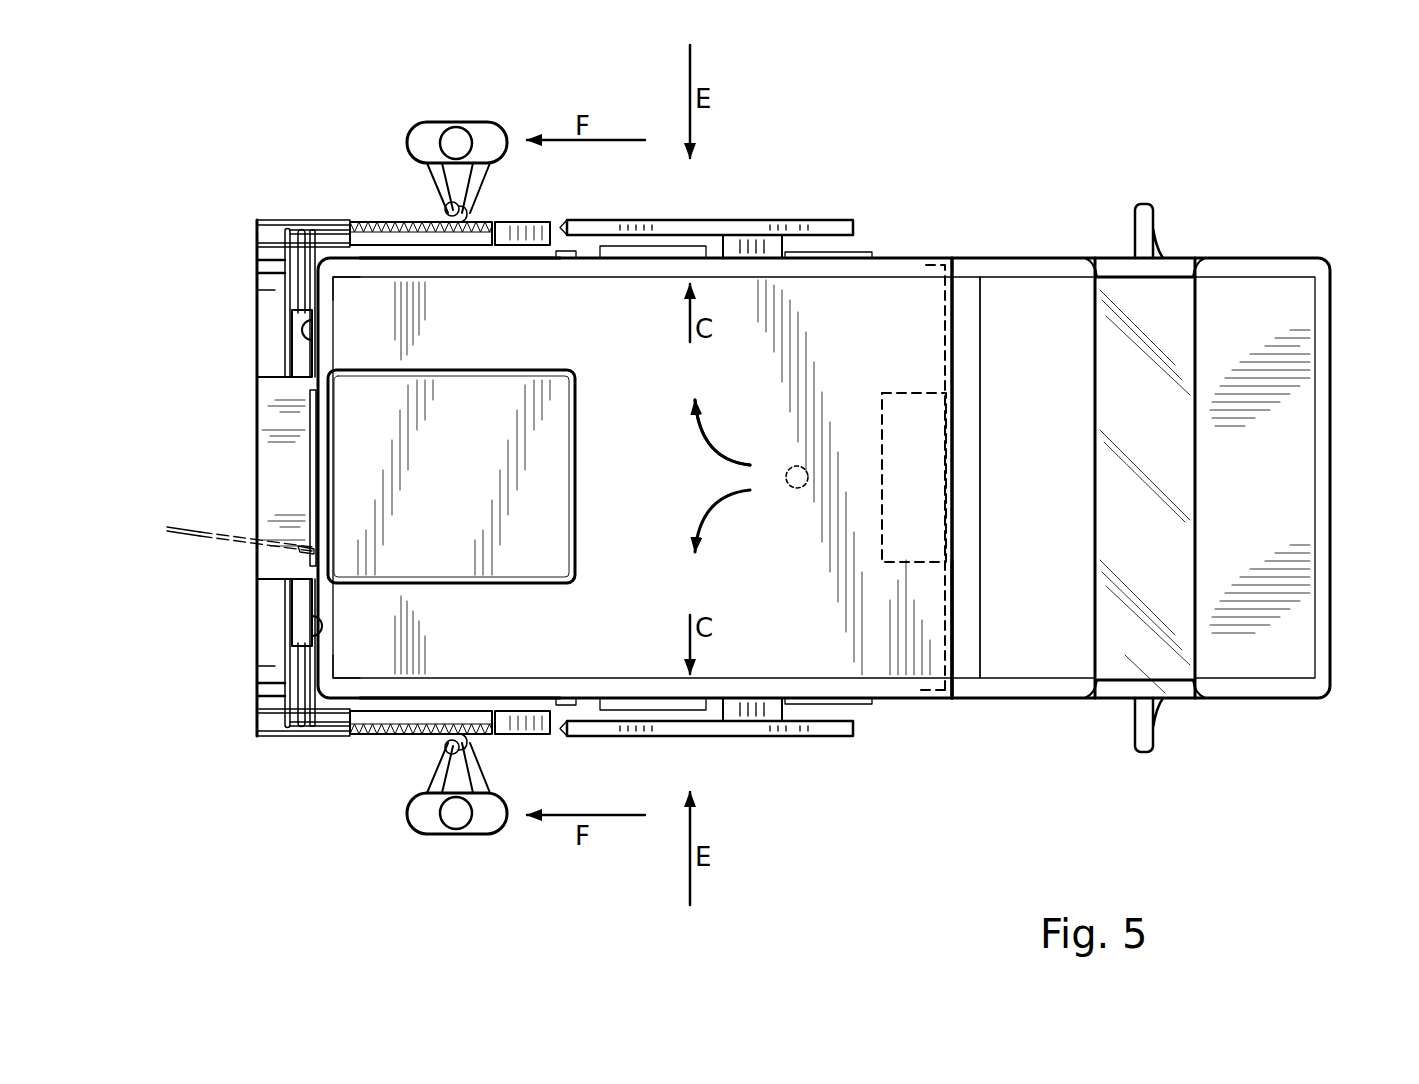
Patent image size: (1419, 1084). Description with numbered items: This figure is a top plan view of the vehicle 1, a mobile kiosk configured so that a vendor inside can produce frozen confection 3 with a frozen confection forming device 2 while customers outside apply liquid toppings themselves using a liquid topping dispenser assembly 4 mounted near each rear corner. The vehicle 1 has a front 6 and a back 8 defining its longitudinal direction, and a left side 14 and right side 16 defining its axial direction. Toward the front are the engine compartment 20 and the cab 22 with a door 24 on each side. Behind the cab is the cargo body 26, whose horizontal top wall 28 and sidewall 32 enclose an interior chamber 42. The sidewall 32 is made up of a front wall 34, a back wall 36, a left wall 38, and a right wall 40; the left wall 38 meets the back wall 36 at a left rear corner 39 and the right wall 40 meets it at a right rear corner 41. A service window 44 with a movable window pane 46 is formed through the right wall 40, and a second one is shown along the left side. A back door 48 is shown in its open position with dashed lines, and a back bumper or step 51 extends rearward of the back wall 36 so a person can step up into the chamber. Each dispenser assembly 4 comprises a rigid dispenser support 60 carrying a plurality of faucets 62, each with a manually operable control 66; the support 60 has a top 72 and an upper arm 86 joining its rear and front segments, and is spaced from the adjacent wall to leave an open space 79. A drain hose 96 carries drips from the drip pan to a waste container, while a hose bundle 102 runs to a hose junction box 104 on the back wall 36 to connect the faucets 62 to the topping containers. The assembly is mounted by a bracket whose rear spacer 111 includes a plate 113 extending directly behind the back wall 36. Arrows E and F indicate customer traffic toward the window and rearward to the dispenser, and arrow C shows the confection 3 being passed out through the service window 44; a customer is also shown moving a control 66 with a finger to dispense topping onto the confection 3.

The vehicle 1 is at (322, 100).
The frozen confection forming device 2 is at (910, 480).
The frozen confection 3 is at (797, 490).
The liquid topping dispenser assembly 4 is at (510, 478).
The front 6 is at (1347, 342).
The back 8 is at (225, 413).
The left side 14 is at (955, 230).
The right side 16 is at (990, 735).
The engine compartment 20 is at (1257, 305).
The cab 22 is at (1182, 248).
The door 24 is at (1055, 256).
The cargo body 26 is at (660, 640).
The top wall 28 is at (650, 491).
The sidewall 32 is at (905, 430).
The front wall 34 is at (945, 325).
The back wall 36 is at (300, 366).
The left wall 38 is at (905, 256).
The left rear corner 39 is at (330, 277).
The right wall 40 is at (912, 700).
The right rear corner 41 is at (330, 679).
The interior chamber 42 is at (780, 660).
The service window 44 is at (714, 477).
The window pane 46 is at (674, 250).
The back door 48 is at (312, 489).
The back bumper or step 51 is at (275, 462).
The dispenser support 60 is at (530, 218).
The faucet 62 is at (373, 475).
The control 66 is at (438, 218).
The top 72 is at (455, 242).
The open space 79 is at (415, 262).
The upper arm 86 is at (463, 478).
The drain hose 96 is at (285, 268).
The hose bundle 102 is at (328, 240).
The hose junction box 104 is at (302, 327).
The rear spacer 111 is at (180, 480).
The plate 113 is at (262, 302).